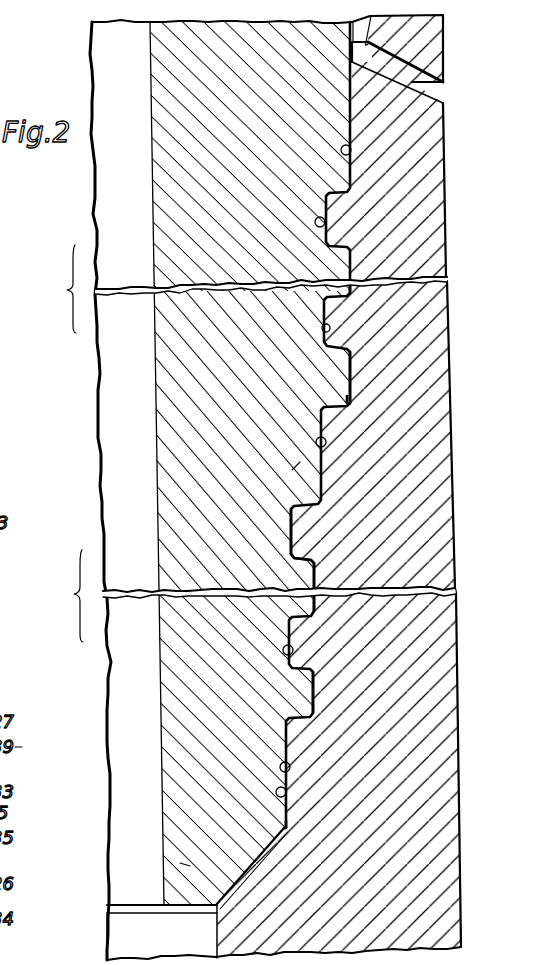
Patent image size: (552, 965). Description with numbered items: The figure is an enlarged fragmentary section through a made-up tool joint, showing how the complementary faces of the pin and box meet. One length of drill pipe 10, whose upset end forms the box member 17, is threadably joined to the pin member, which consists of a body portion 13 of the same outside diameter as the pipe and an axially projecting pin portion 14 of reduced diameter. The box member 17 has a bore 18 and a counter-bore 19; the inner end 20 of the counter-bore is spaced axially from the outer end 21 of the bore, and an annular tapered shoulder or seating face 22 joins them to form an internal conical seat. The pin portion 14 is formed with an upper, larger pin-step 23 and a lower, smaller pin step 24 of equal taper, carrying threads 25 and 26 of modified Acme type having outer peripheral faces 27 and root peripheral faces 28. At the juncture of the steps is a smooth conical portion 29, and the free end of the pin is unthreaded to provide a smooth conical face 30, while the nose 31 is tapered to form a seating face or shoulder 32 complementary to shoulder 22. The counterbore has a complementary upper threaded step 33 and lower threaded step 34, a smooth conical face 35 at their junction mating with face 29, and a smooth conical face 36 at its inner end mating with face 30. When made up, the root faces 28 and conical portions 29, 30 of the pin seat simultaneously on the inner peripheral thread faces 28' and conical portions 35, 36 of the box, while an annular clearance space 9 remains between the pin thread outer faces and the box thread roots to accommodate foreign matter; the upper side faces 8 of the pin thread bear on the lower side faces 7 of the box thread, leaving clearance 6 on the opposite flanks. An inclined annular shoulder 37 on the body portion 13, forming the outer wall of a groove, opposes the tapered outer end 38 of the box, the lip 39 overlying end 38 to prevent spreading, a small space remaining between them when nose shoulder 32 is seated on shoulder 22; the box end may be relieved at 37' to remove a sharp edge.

The clearance 6 is at (303, 623).
The lower side faces of box thread 7 is at (314, 576).
The upper side faces of pin thread 8 is at (309, 557).
The annular clearance space 9 is at (351, 372).
The pipe 10 is at (443, 904).
The body portion 13 is at (170, 36).
The pin portion 14 is at (168, 198).
The box member 17 is at (437, 556).
The bore 18 is at (133, 940).
The counter-bore 19 is at (348, 152).
The inner end of counter-bore 20 is at (285, 827).
The outer end of bore 21 is at (130, 922).
The tapered shoulder or seating face 22 is at (228, 878).
The upper pin-step 23 is at (193, 315).
The lower pin step 24 is at (193, 560).
The threads on upper step 25 is at (345, 377).
The threads on lower step 26 is at (300, 704).
The outer peripheral thread face 27 is at (356, 263).
The root peripheral thread face 28 is at (189, 510).
The inner peripheral thread faces of box 28' is at (405, 214).
The smooth conical portion 29 is at (292, 463).
The smooth conical face 30 is at (285, 762).
The nose 31 is at (185, 865).
The seating face or shoulder 32 is at (248, 852).
The upper threaded step of box 33 is at (348, 312).
The lower threaded step of box 34 is at (318, 532).
The smooth conical face 35 is at (323, 450).
The smooth conical face 36 is at (278, 797).
The annular shoulder 37 is at (435, 50).
The relieved outer end of box 37' is at (329, 21).
The outer end of box member 38 is at (436, 89).
The lip 39 is at (425, 62).